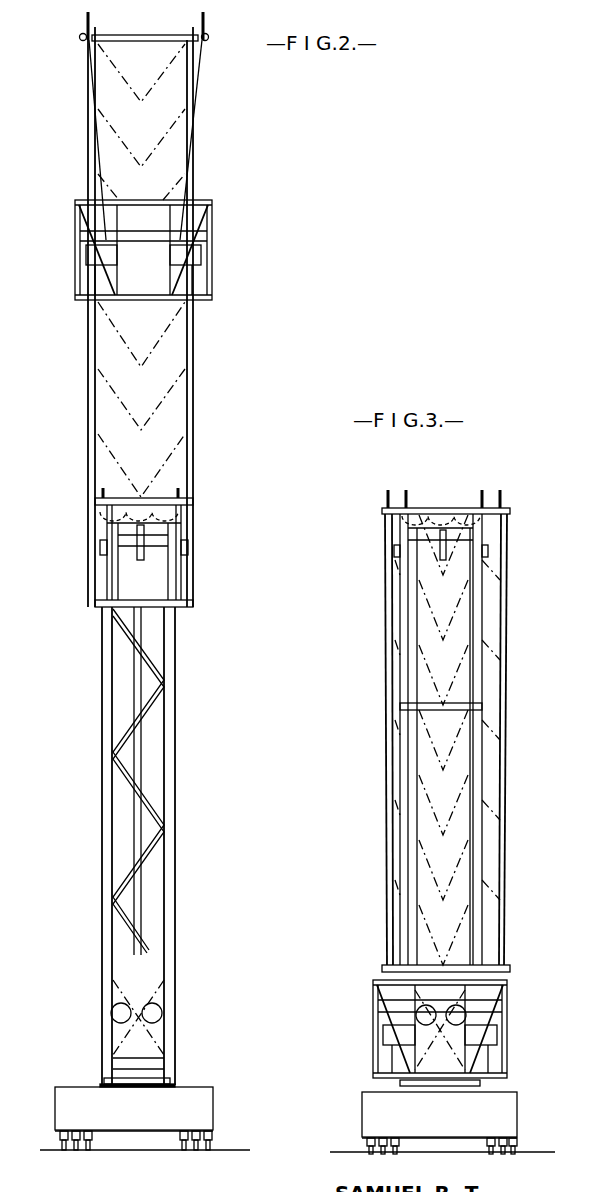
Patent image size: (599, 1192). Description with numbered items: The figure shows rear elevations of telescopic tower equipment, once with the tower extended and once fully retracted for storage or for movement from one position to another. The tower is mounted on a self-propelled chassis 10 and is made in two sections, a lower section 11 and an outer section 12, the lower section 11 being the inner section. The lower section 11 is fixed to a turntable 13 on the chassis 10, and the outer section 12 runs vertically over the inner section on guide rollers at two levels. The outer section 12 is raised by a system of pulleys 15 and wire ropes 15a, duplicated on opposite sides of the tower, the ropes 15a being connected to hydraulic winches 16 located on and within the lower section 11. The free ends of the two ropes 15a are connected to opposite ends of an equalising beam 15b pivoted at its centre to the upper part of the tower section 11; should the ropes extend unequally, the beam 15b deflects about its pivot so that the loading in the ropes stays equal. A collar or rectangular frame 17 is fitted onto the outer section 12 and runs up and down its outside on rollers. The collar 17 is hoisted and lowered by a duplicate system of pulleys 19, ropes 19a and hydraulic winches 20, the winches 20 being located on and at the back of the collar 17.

In FIG. 2, the self-propelled chassis 10 is at (90, 1092).
In FIG. 3, the self-propelled chassis 10 is at (500, 1116).
In FIG. 2, the lower tower section 11 is at (172, 798).
In FIG. 3, the lower tower section 11 is at (472, 770).
In FIG. 2, the outer tower section 12 is at (190, 80).
In FIG. 3, the outer tower section 12 is at (490, 845).
In FIG. 2, the turntable 13 is at (168, 1086).
In FIG. 2, the pulleys 15 is at (182, 493).
In FIG. 3, the pulleys 15 is at (408, 496).
In FIG. 2, the wire ropes 15a is at (178, 575).
In FIG. 2, the equalising beam 15b is at (150, 548).
In FIG. 2, the hydraulic winches 16 is at (111, 1013).
In FIG. 2, the collar 17 is at (205, 273).
In FIG. 3, the collar 17 is at (505, 1040).
In FIG. 2, the pulleys 19 is at (87, 26).
In FIG. 3, the pulleys 19 is at (386, 490).
In FIG. 2, the ropes 19a is at (100, 192).
In FIG. 2, the hydraulic winches 20 is at (93, 260).